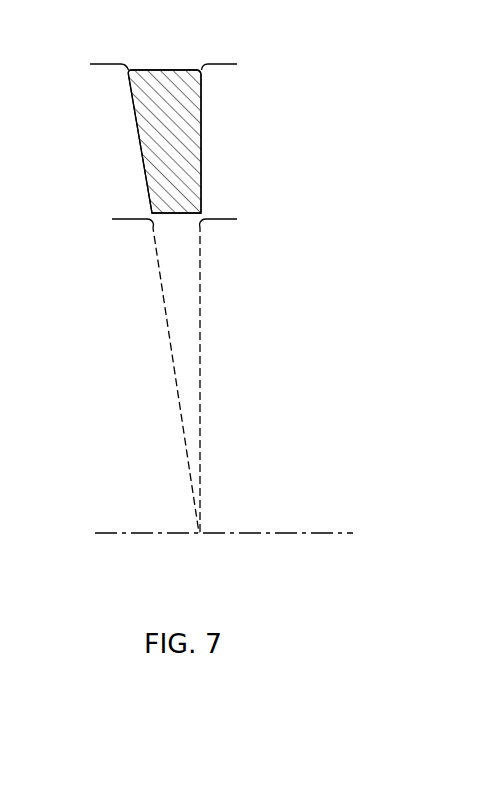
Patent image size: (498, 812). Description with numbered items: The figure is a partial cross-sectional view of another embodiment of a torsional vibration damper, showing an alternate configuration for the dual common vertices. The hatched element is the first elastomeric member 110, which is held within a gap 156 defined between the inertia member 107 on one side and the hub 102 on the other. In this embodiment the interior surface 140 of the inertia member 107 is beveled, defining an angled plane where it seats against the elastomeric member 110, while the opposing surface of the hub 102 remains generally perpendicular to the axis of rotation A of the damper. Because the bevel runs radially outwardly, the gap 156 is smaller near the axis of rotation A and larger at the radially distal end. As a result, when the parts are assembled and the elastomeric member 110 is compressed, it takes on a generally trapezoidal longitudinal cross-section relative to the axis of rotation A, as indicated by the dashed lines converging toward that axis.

The first elastomeric member 110 is at (165, 69).
The inertia member 107 is at (95, 168).
The hub 102 is at (255, 157).
The interior surface 140 is at (154, 224).
The gap 156 is at (200, 224).
The axis of rotation A is at (341, 533).